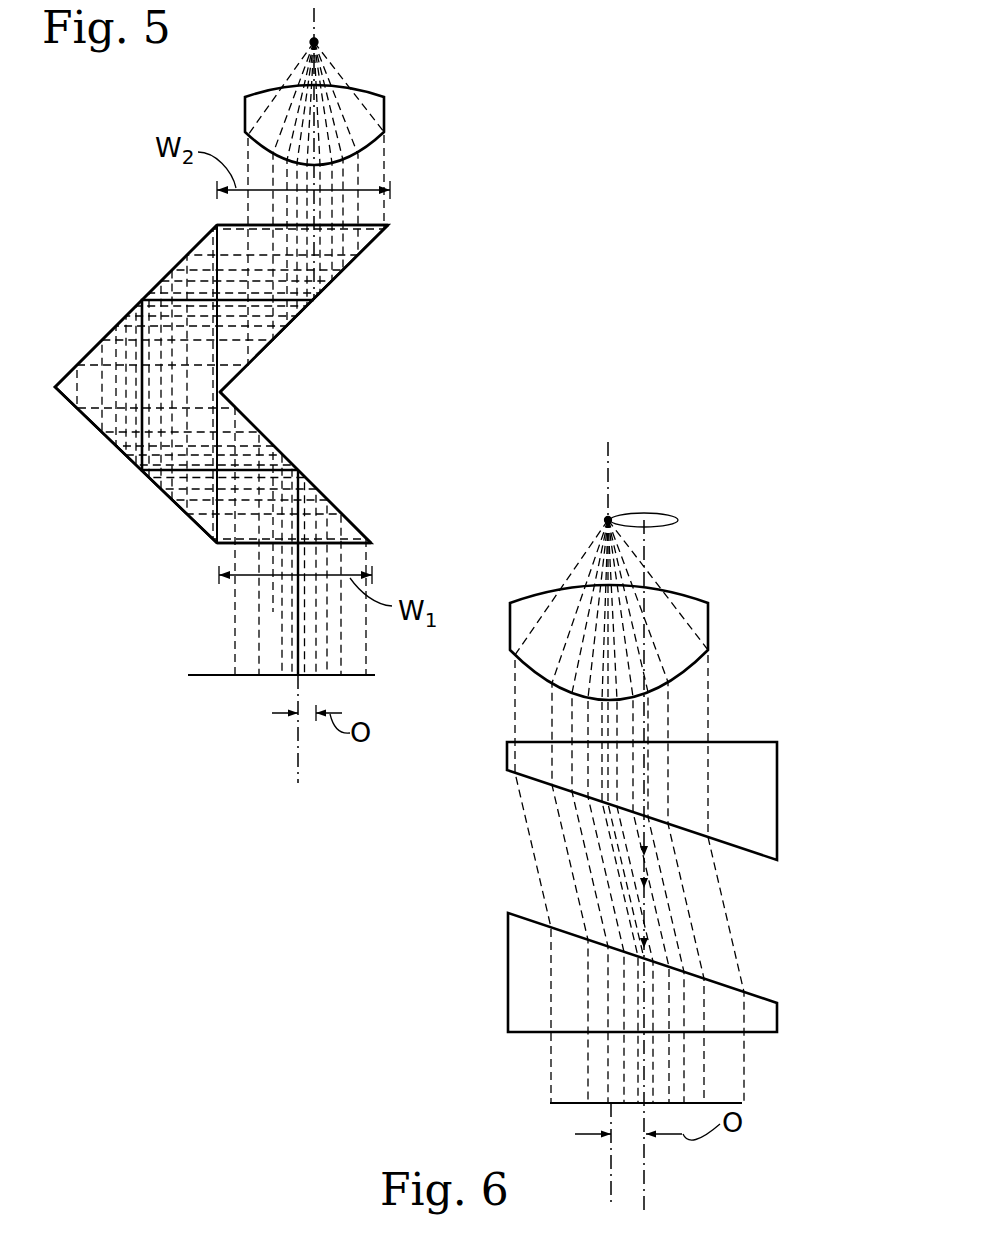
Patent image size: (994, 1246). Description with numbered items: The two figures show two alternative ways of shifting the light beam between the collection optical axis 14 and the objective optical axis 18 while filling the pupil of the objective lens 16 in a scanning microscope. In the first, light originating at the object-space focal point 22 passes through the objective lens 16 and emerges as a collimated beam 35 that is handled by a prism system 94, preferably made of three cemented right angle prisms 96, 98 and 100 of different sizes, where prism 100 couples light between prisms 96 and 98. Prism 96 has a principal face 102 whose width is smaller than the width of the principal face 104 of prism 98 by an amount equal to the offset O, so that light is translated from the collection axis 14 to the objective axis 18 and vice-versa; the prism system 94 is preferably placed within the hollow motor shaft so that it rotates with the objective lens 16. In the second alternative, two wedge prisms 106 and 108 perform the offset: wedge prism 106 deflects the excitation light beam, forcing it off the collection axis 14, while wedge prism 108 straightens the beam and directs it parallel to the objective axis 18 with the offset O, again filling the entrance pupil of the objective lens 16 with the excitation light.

In FIG. 5, the collection optical axis 14 is at (300, 428).
In FIG. 6, the collection optical axis 14 is at (646, 1197).
In FIG. 5, the objective lens 16 is at (386, 115).
In FIG. 6, the objective lens 16 is at (708, 625).
In FIG. 5, the objective optical axis 18 is at (316, 332).
In FIG. 6, the objective optical axis 18 is at (611, 1168).
In FIG. 5, the object-space focal point 22 is at (322, 42).
In FIG. 5, the collimated beam 35 is at (367, 640).
In FIG. 5, the prism system 94 is at (485, 320).
In FIG. 5, the right angle prism 96 is at (357, 522).
In FIG. 5, the right angle prism 98 is at (372, 243).
In FIG. 5, the right angle prism 100 is at (125, 456).
In FIG. 5, the principal face 102 is at (240, 545).
In FIG. 5, the principal face 104 is at (368, 225).
In FIG. 6, the wedge prism 106 is at (777, 1020).
In FIG. 6, the wedge prism 108 is at (777, 795).